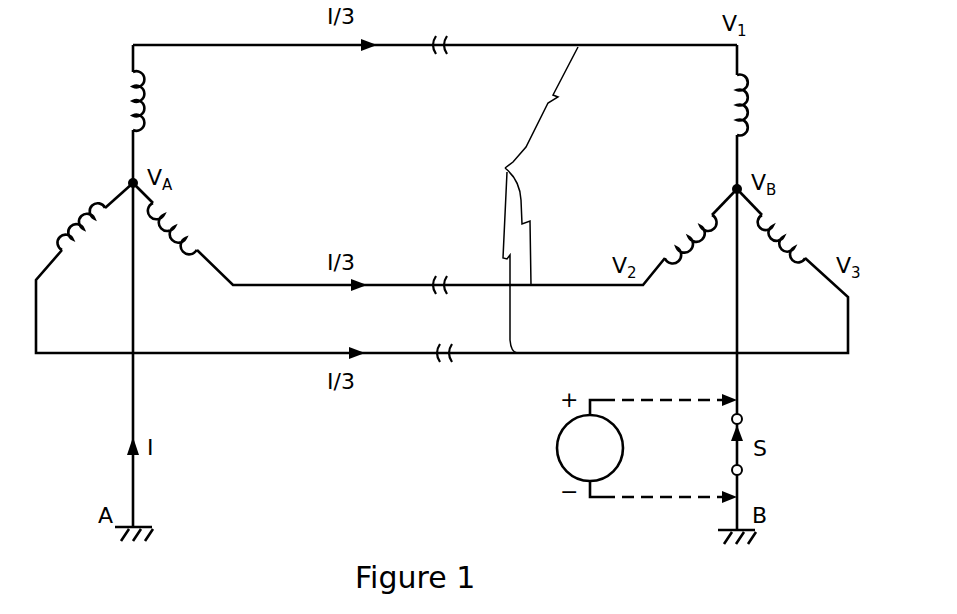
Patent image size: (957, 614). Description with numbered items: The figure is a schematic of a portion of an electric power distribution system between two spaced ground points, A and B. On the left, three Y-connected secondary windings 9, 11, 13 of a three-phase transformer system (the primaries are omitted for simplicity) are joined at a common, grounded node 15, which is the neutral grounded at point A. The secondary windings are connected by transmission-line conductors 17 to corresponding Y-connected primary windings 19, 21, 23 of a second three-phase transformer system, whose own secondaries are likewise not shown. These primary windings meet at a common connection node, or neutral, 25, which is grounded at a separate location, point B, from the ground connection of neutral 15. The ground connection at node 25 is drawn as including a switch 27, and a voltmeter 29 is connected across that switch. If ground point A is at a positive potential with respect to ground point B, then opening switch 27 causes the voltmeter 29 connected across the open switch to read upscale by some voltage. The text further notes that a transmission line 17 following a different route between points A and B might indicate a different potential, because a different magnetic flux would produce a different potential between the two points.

The Y-connected secondary winding 9 is at (145, 108).
The Y-connected secondary winding 11 is at (70, 223).
The Y-connected secondary winding 13 is at (184, 246).
The common grounded node 15 is at (130, 181).
The transmission-line conductors 17 is at (499, 184).
The Y-connected primary winding 19 is at (751, 113).
The Y-connected primary winding 21 is at (793, 257).
The Y-connected primary winding 23 is at (688, 225).
The common connection node 25 is at (735, 188).
The switch 27 is at (734, 446).
The voltmeter 29 is at (557, 448).